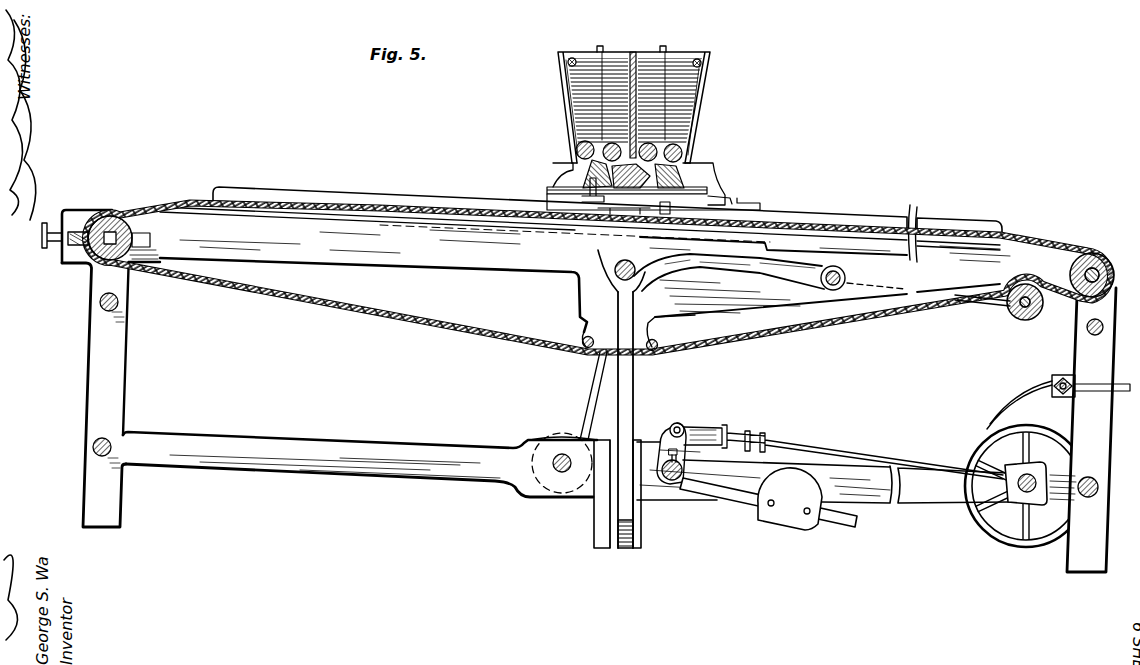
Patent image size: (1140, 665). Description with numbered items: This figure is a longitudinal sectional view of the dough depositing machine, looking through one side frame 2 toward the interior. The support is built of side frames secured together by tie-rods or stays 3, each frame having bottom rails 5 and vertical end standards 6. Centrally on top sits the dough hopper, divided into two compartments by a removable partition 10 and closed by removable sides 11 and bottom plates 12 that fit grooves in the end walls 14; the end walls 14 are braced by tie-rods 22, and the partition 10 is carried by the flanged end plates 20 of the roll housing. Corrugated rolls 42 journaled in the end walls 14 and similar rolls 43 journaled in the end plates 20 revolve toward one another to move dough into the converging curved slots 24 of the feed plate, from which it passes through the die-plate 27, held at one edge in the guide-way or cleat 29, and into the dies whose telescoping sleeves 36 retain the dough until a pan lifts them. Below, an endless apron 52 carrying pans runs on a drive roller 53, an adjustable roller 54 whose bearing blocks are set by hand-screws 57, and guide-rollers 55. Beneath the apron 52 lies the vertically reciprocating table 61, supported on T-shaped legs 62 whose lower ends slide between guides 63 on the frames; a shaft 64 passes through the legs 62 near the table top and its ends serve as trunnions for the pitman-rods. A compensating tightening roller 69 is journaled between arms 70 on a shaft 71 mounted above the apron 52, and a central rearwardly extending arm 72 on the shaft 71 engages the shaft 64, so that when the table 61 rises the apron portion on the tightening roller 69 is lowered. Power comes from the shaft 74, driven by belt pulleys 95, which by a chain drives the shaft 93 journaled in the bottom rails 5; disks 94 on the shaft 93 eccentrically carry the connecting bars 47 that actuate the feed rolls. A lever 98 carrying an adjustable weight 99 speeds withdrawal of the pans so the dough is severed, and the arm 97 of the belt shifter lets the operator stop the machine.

The side frame 2 is at (300, 350).
The tie-rods or stays 3 is at (120, 302).
The bottom rails 5 is at (343, 453).
The vertical end standards 6 is at (95, 358).
The partition 10 is at (636, 62).
The sides 11 is at (570, 112).
The bottom plates 12 is at (568, 170).
The end walls 14 is at (637, 96).
The end plates 20 is at (621, 105).
The tie-rods 22 is at (573, 58).
The converging curved slots 24 is at (545, 190).
The die-plate 27 is at (612, 208).
The guide-way or cleat 29 is at (722, 214).
The sleeves 36 is at (577, 196).
The corrugated rolls 42 is at (578, 152).
The rolls 43 is at (610, 143).
The connecting bars 47 is at (590, 398).
The endless apron 52 is at (460, 326).
The drive roller 53 is at (1087, 258).
The roller 54 is at (116, 226).
The guide-rollers 55 is at (580, 350).
The hand-screws 57 is at (50, 247).
The vertically reciprocating table 61 is at (435, 218).
The T-shaped legs 62 is at (628, 392).
The guides 63 is at (608, 500).
The shaft 64 is at (614, 271).
The tightening roller 69 is at (1024, 322).
The arms 70 is at (980, 304).
The shaft 71 is at (834, 290).
The rearwardly extending arm 72 is at (782, 278).
The shaft 74 is at (1018, 490).
The shaft 93 is at (556, 470).
The disks 94 is at (562, 437).
The belt pulleys 95 is at (1016, 543).
The arm 97 is at (1121, 386).
The lever 98 is at (731, 495).
The adjustable weight 99 is at (781, 518).